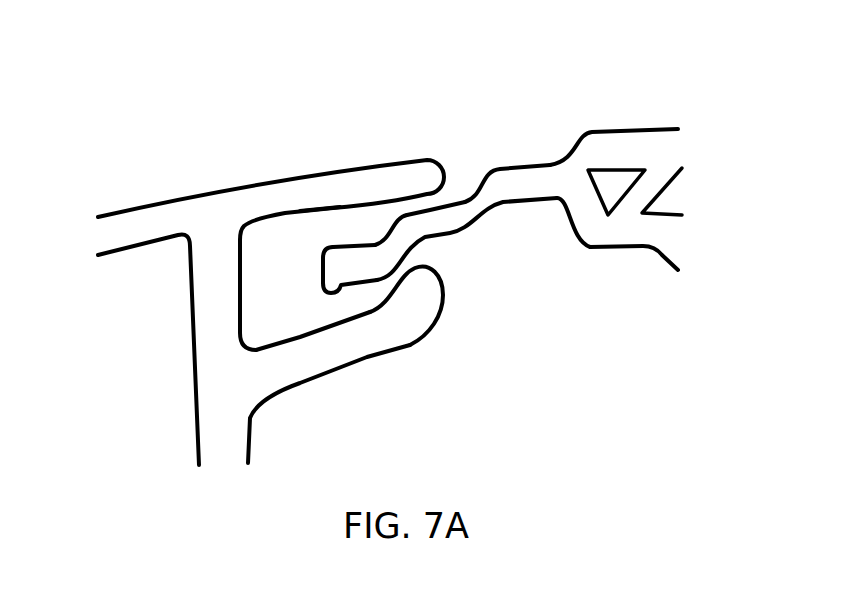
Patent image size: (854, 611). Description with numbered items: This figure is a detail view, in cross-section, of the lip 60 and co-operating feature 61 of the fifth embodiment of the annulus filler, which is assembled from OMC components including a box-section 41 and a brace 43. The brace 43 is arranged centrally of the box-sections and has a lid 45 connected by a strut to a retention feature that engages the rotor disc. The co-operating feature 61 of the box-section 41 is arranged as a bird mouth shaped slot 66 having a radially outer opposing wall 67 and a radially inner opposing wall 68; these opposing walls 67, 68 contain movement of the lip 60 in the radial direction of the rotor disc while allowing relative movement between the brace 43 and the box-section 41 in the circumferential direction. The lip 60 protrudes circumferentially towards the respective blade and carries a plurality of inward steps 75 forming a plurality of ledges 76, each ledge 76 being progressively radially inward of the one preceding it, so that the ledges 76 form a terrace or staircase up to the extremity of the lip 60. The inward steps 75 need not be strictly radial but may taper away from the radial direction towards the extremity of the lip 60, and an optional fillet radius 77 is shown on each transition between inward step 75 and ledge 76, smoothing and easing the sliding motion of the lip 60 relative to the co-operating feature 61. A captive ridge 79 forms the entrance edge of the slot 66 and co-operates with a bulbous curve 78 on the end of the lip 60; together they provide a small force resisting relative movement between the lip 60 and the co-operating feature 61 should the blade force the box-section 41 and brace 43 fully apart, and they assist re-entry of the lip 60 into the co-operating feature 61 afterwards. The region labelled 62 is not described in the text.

The box-section 41 is at (210, 362).
The brace 43 is at (660, 225).
The lid 45 is at (638, 145).
The lip 60 is at (540, 182).
The co-operating feature 61 is at (284, 211).
The gap 62 is at (460, 133).
The bird mouth shaped slot 66 is at (237, 273).
The radially outer opposing wall 67 is at (322, 207).
The radially inner opposing wall 68 is at (352, 325).
The inward step 75 is at (390, 228).
The ledge 76 is at (360, 243).
The fillet radius 77 is at (471, 206).
The bulbous curve 78 is at (330, 283).
The captive ridge 79 is at (430, 283).